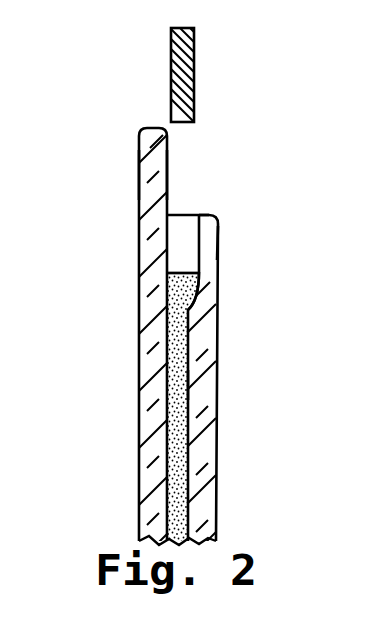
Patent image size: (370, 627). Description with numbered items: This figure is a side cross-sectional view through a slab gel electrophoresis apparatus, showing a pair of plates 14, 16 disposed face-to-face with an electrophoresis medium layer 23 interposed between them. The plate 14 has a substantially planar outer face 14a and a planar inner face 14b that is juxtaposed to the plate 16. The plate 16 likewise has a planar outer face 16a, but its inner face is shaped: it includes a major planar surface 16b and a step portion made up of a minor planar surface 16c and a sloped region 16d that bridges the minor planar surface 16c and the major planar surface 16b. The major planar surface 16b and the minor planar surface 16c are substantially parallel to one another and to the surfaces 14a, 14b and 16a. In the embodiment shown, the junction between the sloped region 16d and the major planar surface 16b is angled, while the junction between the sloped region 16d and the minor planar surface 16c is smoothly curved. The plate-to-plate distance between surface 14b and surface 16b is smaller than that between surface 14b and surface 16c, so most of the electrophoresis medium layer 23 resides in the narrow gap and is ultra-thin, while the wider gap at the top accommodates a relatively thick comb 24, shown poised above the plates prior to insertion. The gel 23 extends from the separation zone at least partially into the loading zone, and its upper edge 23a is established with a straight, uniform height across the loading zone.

The plate 14 is at (148, 300).
The outer face of plate 14 14a is at (139, 178).
The inner face of plate 14 14b is at (168, 172).
The plate 16 is at (204, 357).
The outer face of plate 16 16a is at (218, 238).
The major planar surface 16b is at (185, 388).
The minor planar surface 16c is at (204, 240).
The sloped region 16d is at (193, 312).
The electrophoresis medium layer 23 is at (181, 428).
The upper edge of the gel 23a is at (190, 273).
The comb 24 is at (203, 51).